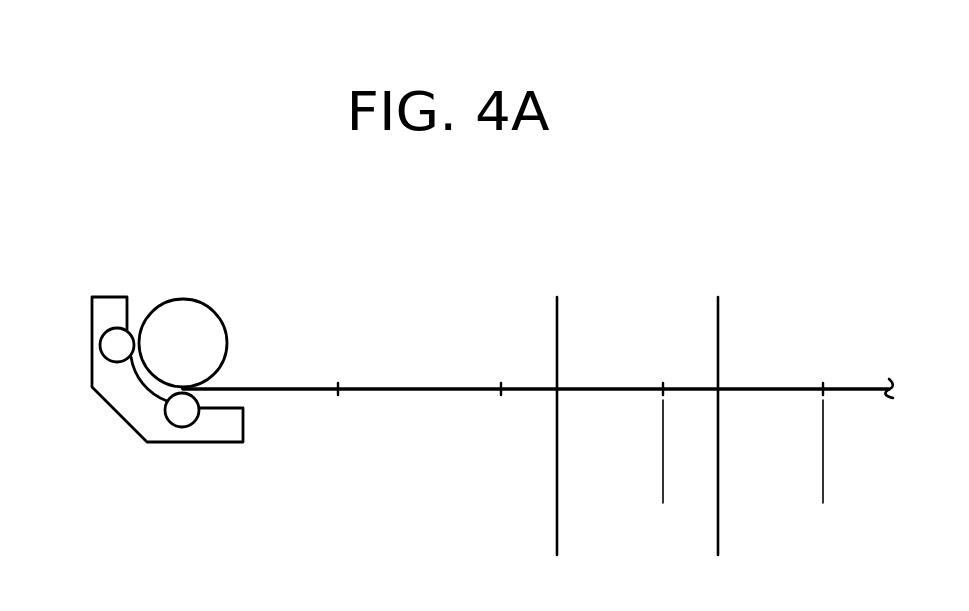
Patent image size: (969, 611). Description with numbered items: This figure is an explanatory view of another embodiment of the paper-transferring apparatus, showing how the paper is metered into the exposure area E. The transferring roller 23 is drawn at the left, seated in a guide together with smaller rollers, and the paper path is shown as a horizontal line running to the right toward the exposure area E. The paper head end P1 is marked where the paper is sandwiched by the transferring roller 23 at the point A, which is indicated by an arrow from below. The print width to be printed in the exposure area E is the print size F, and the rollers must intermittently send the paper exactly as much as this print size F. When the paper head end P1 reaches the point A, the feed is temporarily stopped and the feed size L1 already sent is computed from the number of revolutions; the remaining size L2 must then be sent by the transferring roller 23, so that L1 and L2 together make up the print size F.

The transferring roller 23 is at (180, 318).
The paper head end P1 is at (183, 388).
The point A is at (178, 392).
The exposure area E is at (557, 303).
The print size F is at (663, 496).
The feed size L1 is at (718, 443).
The remaining size L2 is at (823, 443).